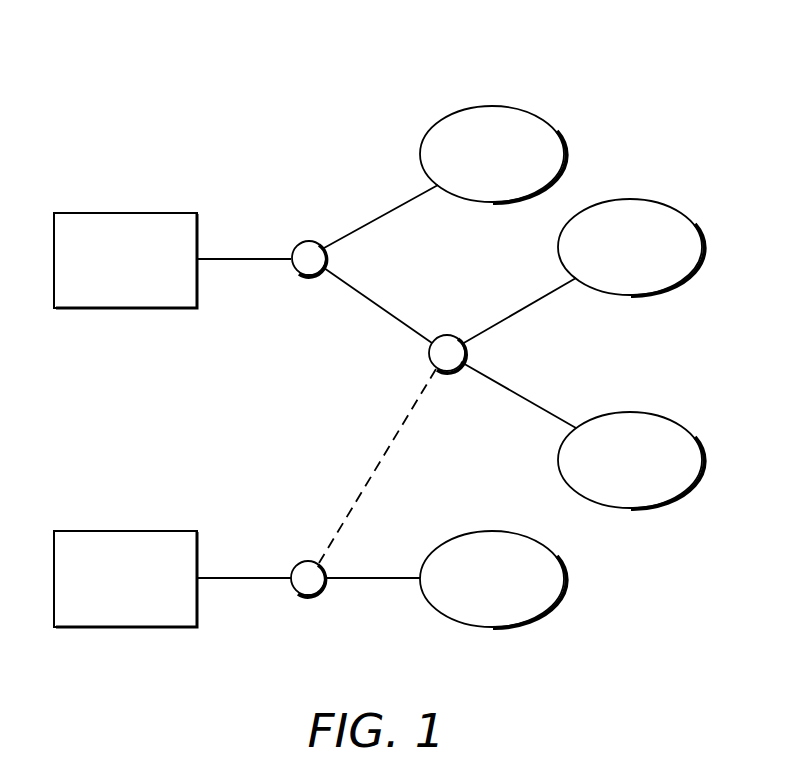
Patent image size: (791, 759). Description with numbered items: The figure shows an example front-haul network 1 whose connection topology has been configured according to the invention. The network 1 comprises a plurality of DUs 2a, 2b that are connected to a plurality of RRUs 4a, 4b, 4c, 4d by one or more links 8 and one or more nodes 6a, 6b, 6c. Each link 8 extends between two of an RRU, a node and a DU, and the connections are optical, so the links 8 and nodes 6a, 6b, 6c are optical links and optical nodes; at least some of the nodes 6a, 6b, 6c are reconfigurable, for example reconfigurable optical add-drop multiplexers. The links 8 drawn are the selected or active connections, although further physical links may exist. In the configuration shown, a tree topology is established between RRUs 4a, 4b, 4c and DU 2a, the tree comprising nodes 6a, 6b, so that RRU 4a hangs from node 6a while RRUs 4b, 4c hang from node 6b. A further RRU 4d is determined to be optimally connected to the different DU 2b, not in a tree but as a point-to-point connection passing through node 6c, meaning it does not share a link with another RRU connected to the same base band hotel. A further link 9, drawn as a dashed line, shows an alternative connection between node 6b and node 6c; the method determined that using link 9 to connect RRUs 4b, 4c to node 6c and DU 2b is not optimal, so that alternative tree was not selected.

The front-haul network 1 is at (160, 64).
The DU 2a is at (78, 212).
The DU 2b is at (78, 530).
The RRU 4a is at (490, 106).
The RRU 4b is at (629, 199).
The RRU 4c is at (628, 508).
The RRU 4d is at (490, 627).
The node 6a is at (308, 240).
The node 6b is at (446, 334).
The node 6c is at (310, 596).
The link 8 is at (241, 258).
The link 9 is at (384, 451).